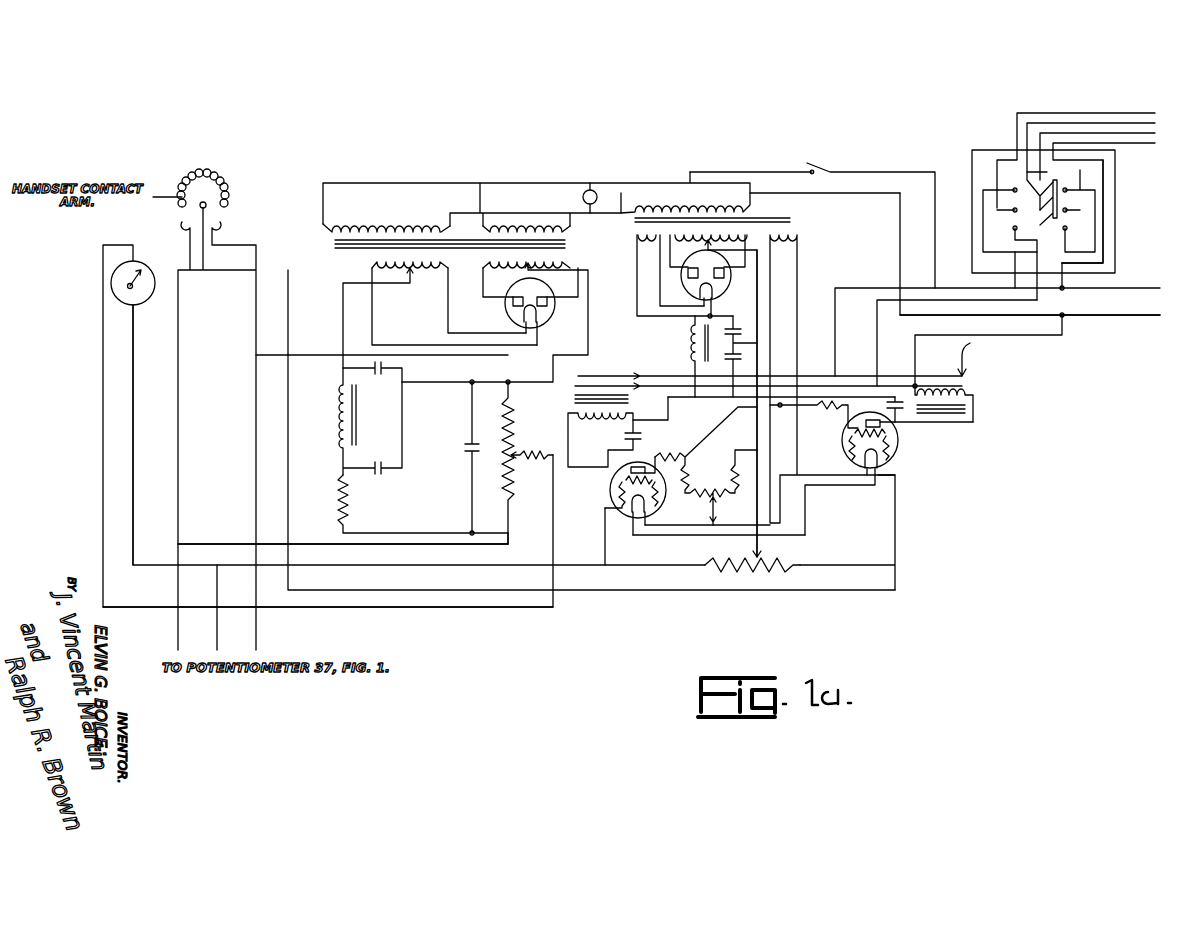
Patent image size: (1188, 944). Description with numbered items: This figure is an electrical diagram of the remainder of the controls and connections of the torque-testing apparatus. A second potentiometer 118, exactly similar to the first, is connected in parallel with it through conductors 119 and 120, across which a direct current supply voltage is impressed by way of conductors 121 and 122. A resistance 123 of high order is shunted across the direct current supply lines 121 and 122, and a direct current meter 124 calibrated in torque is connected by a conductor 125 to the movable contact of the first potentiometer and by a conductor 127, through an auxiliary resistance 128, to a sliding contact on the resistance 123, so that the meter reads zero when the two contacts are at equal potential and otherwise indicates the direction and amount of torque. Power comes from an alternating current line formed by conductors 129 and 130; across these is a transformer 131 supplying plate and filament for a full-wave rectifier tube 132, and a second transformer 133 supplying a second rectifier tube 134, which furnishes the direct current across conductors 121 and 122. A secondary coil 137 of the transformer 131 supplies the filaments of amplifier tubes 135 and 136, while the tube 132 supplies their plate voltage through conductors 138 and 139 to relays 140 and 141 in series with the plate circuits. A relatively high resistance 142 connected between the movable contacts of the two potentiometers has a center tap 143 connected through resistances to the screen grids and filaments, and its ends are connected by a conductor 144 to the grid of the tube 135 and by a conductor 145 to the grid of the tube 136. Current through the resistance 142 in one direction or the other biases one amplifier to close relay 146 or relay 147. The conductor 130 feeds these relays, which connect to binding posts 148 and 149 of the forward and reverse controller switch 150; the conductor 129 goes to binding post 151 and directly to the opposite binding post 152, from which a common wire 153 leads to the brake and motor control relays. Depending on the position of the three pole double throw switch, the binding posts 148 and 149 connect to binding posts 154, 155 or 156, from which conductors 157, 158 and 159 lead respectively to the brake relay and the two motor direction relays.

The second potentiometer 118 is at (212, 180).
The conductor 119 is at (256, 315).
The conductor 120 is at (178, 383).
The direct current supply line 121 is at (300, 360).
The direct current supply line 122 is at (305, 544).
The resistance 123 is at (514, 426).
The direct current meter 124 is at (140, 307).
The conductor 125 is at (133, 482).
The conductor 127 is at (355, 605).
The auxiliary resistance 128 is at (531, 465).
The alternating current conductor 129 is at (1118, 295).
The alternating current conductor 130 is at (1118, 320).
The transformer 131 is at (740, 222).
The full-wave rectifier tube 132 is at (726, 292).
The second transformer 133 is at (565, 244).
The second full-wave rectifier tube 134 is at (505, 306).
The amplifier tube 135 is at (660, 498).
The amplifier tube 136 is at (898, 445).
The secondary coil 137 is at (797, 242).
The conductor 138 is at (646, 420).
The conductor 139 is at (864, 400).
The relay 140 is at (602, 403).
The relay 141 is at (950, 415).
The high resistance 142 is at (790, 568).
The center tap 143 is at (760, 543).
The conductor 144 is at (605, 550).
The conductor 145 is at (897, 527).
The relay 146 is at (582, 376).
The relay 147 is at (988, 350).
The binding post 148 is at (1013, 265).
The binding post 149 is at (1048, 275).
The forward and reverse controller switch 150 is at (1118, 220).
The binding post 151 is at (1062, 258).
The binding post 152 is at (1045, 165).
The common wire 153 is at (1118, 148).
The binding post 154 is at (1013, 160).
The binding post 155 is at (1030, 165).
The binding post 156 is at (1027, 160).
The conductor 157 is at (1120, 133).
The conductor 158 is at (1130, 123).
The conductor 159 is at (1120, 113).